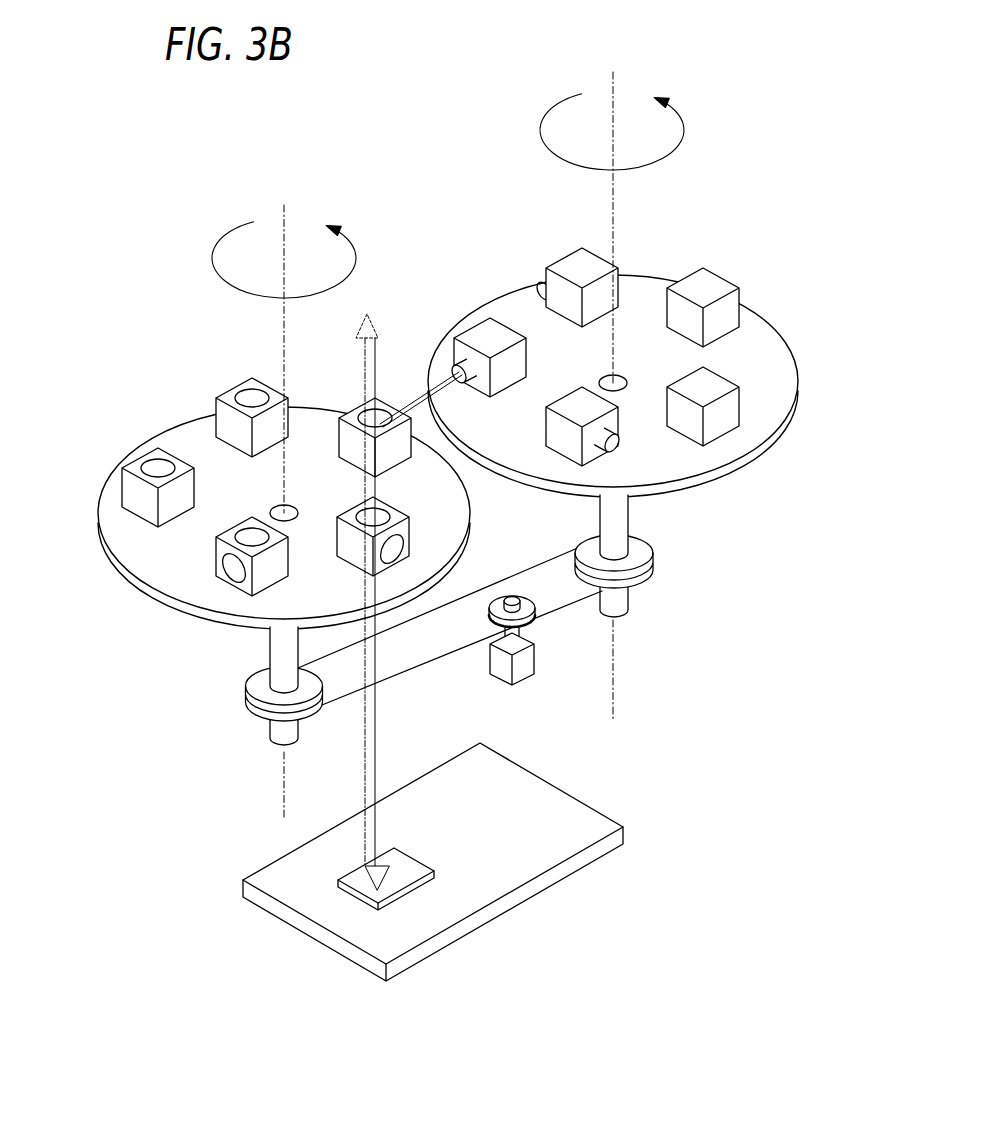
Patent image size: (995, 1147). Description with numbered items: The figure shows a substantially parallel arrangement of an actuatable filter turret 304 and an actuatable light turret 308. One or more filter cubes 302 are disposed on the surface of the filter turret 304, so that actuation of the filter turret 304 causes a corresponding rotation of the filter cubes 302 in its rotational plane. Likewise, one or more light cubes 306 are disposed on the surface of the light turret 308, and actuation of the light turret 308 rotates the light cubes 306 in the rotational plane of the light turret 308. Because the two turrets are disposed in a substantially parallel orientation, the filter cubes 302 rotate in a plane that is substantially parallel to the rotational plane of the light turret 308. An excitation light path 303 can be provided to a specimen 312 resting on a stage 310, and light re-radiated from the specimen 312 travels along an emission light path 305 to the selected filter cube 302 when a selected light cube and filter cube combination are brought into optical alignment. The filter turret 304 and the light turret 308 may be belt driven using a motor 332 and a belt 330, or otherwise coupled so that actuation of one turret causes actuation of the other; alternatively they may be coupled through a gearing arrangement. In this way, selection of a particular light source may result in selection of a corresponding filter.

The filter cubes 302 is at (145, 460).
The excitation light path 303 is at (413, 400).
The filter turret 304 is at (140, 583).
The emission light path 305 is at (365, 388).
The light cubes 306 is at (573, 272).
The light turret 308 is at (748, 460).
The stage 310 is at (460, 933).
The specimen 312 is at (403, 865).
The belt 330 is at (408, 672).
The motor 332 is at (520, 665).